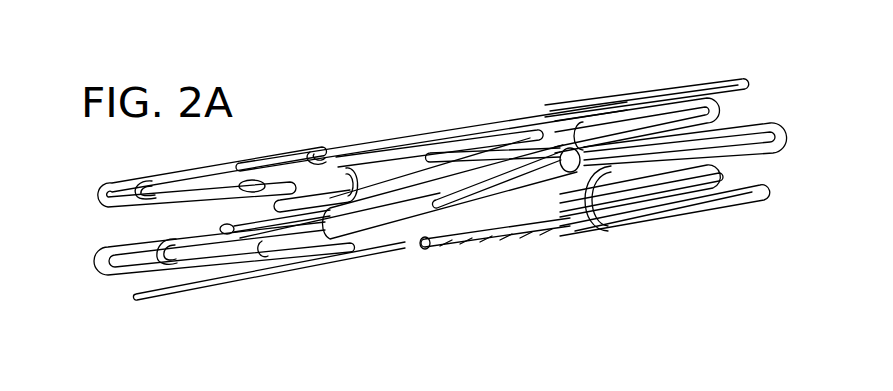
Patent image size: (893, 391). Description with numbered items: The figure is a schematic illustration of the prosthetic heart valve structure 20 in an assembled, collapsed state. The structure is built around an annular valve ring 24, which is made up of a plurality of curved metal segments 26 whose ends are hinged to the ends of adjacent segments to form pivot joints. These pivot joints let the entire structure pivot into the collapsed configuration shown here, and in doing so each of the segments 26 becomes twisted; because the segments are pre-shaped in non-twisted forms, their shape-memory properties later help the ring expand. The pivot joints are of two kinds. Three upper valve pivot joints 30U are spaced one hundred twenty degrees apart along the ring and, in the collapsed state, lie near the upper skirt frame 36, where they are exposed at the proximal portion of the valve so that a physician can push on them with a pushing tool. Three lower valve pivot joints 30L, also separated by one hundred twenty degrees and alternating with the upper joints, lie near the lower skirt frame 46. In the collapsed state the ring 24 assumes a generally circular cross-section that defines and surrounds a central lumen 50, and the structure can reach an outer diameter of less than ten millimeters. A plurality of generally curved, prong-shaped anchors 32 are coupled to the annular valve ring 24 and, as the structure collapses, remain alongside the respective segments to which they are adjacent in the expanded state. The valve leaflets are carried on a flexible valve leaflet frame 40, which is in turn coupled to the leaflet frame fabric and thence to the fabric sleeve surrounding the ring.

The valve structure 20 is at (680, 66).
The annular valve ring 24 is at (394, 278).
The curved metal segments 26 is at (395, 168).
The lower valve pivot joints 30L is at (328, 158).
The upper valve pivot joints 30U is at (608, 180).
The anchors 32 is at (457, 158).
The upper skirt frame 36 is at (691, 208).
The valve leaflet frame 40 is at (222, 225).
The lower skirt frame 46 is at (191, 289).
The central lumen 50 is at (795, 104).